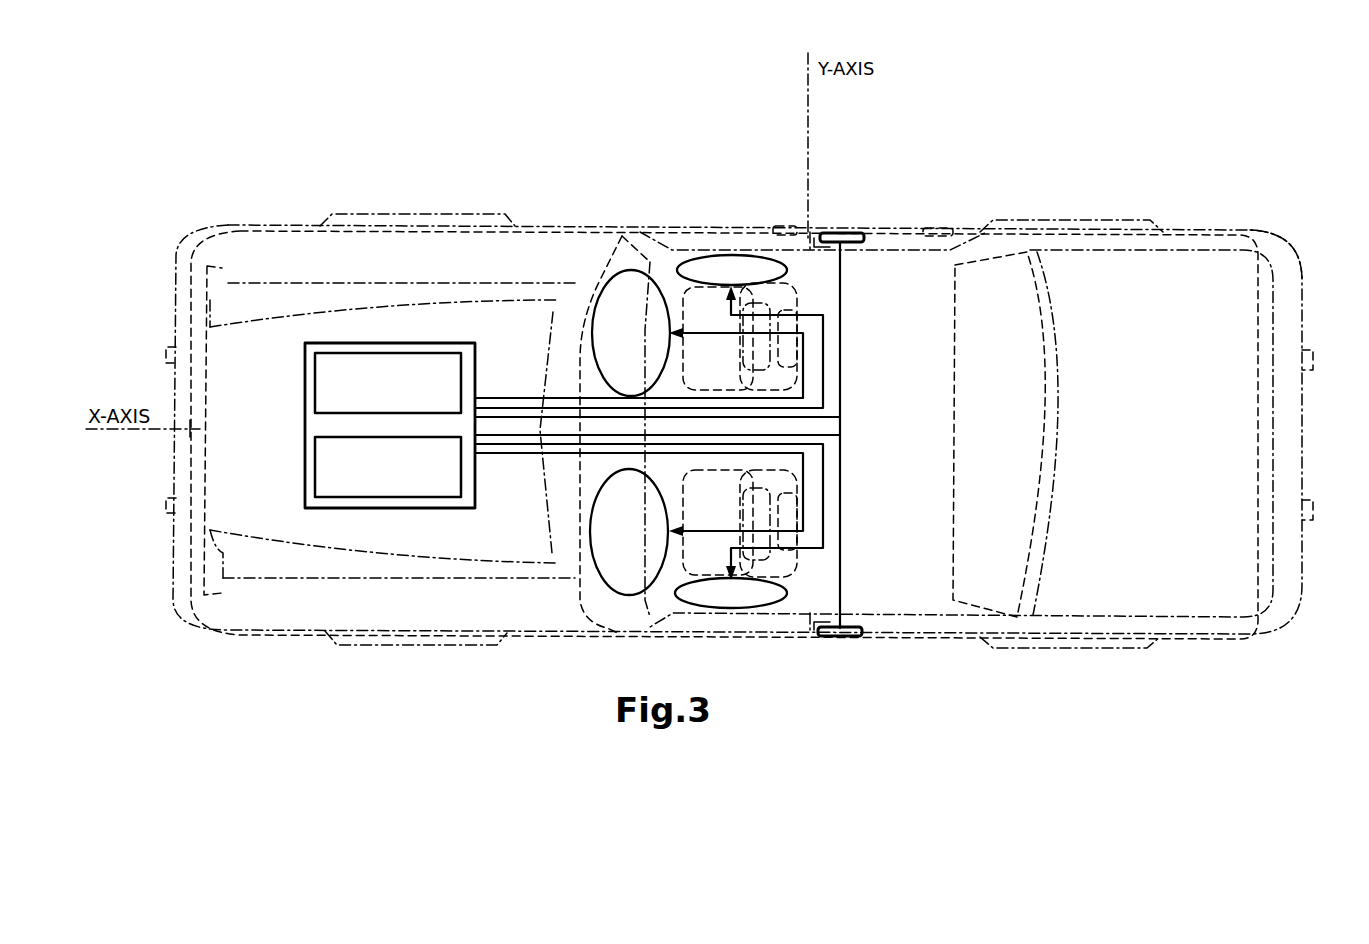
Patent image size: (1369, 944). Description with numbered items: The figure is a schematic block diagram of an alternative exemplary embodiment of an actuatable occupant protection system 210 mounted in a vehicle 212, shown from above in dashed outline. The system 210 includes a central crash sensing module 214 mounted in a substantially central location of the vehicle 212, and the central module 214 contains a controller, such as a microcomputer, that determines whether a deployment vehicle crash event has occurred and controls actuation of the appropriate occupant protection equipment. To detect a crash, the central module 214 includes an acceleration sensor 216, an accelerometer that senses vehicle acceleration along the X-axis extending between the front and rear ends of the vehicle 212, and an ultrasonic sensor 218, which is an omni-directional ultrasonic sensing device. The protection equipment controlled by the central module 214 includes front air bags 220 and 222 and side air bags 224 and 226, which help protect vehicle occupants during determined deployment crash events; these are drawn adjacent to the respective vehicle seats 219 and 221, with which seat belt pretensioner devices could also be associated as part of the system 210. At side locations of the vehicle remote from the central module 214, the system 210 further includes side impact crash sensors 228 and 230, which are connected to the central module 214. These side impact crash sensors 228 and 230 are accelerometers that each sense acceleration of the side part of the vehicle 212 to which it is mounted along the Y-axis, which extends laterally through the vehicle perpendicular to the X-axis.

The actuatable occupant protection system 210 is at (876, 277).
The vehicle 212 is at (1268, 213).
The central crash sensing module 214 is at (468, 475).
The acceleration sensor 216 is at (327, 386).
The ultrasonic sensor 218 is at (322, 473).
The vehicle seat 219 is at (790, 566).
The front air bag 220 is at (628, 558).
The vehicle seat 221 is at (793, 299).
The front air bag 222 is at (628, 300).
The side air bag 224 is at (742, 598).
The side air bag 226 is at (731, 270).
The side impact crash sensor 228 is at (845, 637).
The side impact crash sensor 230 is at (848, 232).